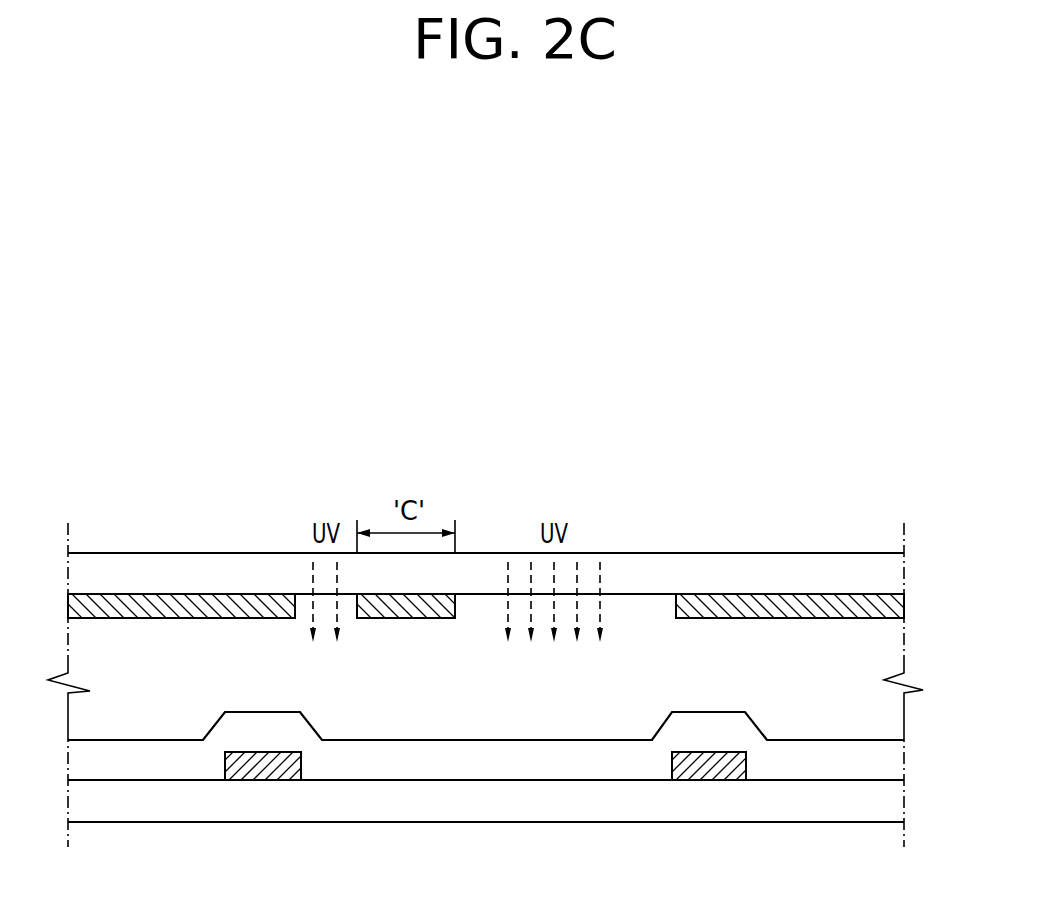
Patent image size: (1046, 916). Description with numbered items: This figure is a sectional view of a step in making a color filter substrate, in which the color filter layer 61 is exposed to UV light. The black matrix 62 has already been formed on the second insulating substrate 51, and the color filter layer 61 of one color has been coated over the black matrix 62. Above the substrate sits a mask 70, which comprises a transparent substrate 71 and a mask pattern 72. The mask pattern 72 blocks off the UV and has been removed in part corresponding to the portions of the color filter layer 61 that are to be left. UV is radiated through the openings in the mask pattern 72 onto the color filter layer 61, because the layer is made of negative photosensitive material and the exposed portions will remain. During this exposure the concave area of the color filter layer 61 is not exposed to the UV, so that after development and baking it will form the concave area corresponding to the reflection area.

The mask 70 is at (703, 458).
The transparent substrate 71 is at (790, 567).
The mask pattern 72 is at (698, 603).
The second insulating substrate 51 is at (470, 814).
The color filter layer 61 is at (376, 765).
The black matrix 62 is at (712, 773).